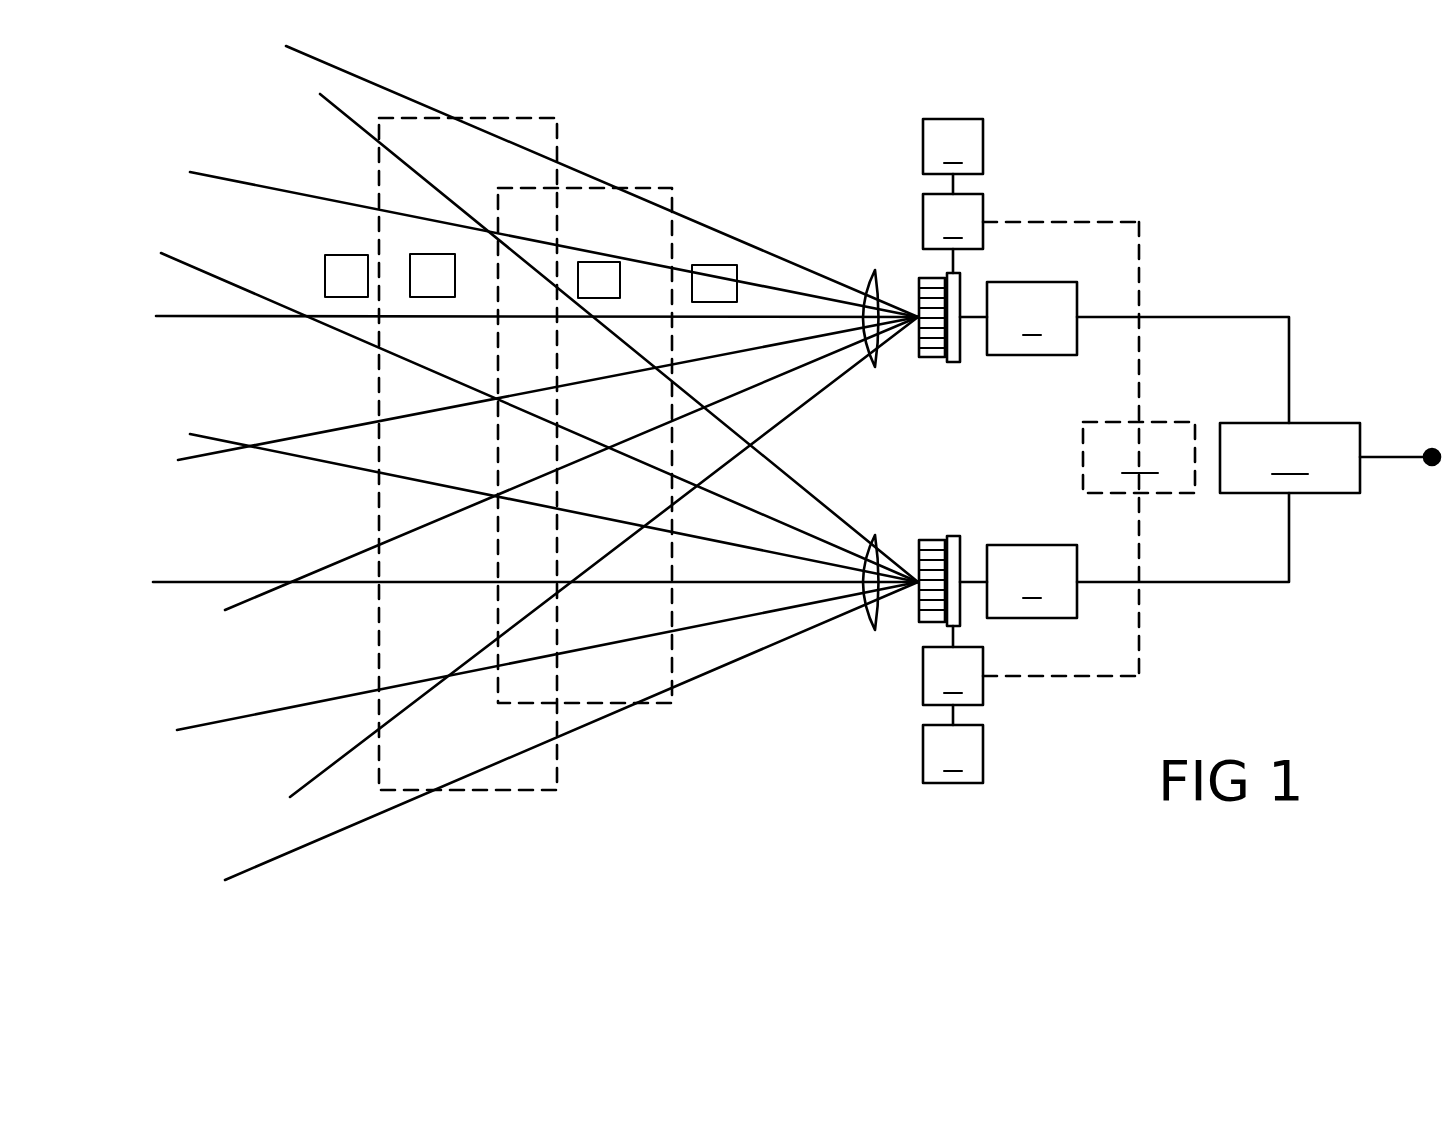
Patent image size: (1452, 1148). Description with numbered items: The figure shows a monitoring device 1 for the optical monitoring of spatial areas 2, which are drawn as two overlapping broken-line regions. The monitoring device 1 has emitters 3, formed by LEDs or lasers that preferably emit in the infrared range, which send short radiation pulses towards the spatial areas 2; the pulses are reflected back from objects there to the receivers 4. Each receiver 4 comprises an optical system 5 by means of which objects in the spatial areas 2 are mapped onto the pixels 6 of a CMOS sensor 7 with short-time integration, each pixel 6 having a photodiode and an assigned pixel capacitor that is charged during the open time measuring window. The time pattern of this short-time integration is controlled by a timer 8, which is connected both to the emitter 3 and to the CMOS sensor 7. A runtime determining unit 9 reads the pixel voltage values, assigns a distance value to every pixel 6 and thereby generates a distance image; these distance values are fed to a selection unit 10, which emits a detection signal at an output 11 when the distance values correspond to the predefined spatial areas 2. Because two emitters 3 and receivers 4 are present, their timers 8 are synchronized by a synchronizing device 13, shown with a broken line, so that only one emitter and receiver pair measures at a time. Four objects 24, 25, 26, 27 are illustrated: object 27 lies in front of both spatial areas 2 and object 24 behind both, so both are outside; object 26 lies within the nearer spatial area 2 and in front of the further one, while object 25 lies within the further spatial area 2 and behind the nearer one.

The monitoring device 1 is at (810, 183).
The spatial areas 2 is at (512, 748).
The emitter 3 is at (953, 451).
The receiver 4 is at (996, 243).
The optical system 5 is at (873, 272).
The pixels 6 is at (936, 340).
The CMOS sensor 7 is at (955, 362).
The timer 8 is at (953, 449).
The runtime determining unit 9 is at (1032, 450).
The selection unit 10 is at (1218, 449).
The output 11 is at (1429, 468).
The synchronizing device 13 is at (1089, 449).
The object 24 is at (346, 276).
The object 25 is at (432, 275).
The object 26 is at (599, 280).
The object 27 is at (714, 283).